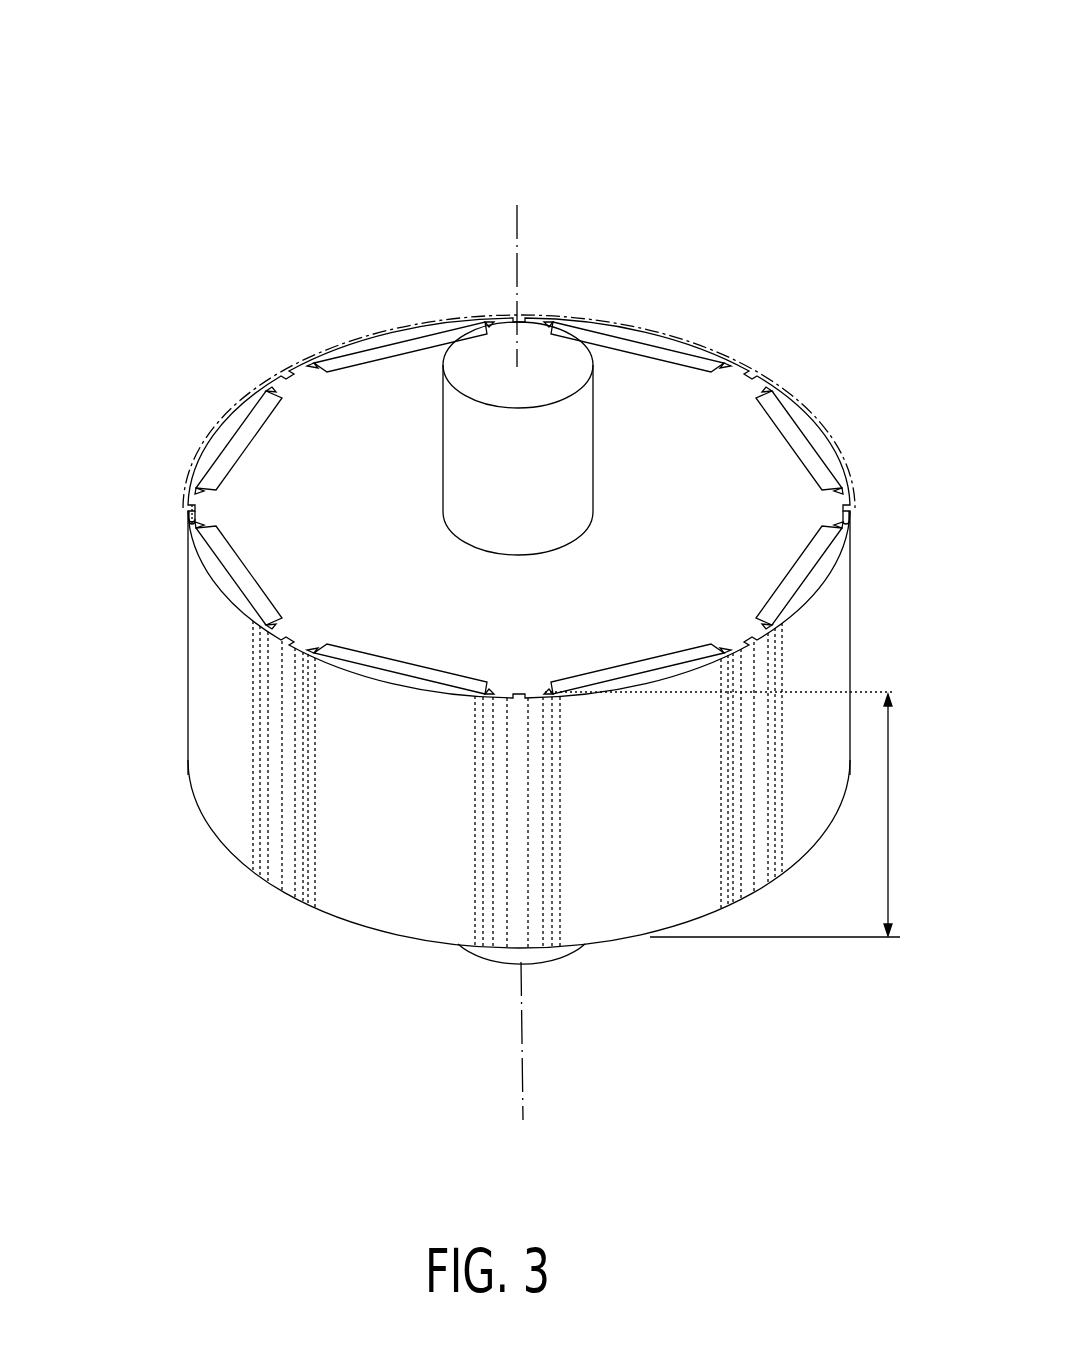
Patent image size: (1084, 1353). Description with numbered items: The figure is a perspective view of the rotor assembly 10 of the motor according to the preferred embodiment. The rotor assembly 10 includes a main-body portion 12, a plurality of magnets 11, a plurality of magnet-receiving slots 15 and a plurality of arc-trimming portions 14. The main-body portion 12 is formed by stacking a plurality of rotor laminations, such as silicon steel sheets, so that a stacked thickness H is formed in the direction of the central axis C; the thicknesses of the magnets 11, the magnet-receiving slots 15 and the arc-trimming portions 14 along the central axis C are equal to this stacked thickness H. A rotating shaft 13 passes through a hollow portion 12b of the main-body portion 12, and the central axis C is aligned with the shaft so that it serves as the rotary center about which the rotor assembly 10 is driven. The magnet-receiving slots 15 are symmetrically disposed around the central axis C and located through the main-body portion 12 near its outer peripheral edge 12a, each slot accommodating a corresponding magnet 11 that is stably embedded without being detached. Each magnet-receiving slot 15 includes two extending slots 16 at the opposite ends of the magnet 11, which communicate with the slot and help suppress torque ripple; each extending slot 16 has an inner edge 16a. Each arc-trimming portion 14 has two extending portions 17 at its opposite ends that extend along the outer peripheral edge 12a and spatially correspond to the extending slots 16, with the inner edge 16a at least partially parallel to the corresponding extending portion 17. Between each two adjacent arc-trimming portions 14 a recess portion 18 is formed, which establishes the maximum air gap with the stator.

The rotor assembly 10 is at (176, 51).
The magnet 11 is at (245, 443).
The main-body portion 12 is at (320, 413).
The outer peripheral edge 12a is at (758, 373).
The hollow portion 12b is at (545, 556).
The rotating shaft 13 is at (578, 352).
The arc-trimming portion 14 is at (190, 462).
The magnet-receiving slot 15 is at (397, 343).
The extending slot 16 is at (265, 387).
The inner edge 16a is at (187, 505).
The extending portion 17 is at (273, 385).
The recess portion 18 is at (737, 373).
The central axis C is at (543, 633).
The stacked thickness H is at (734, 814).